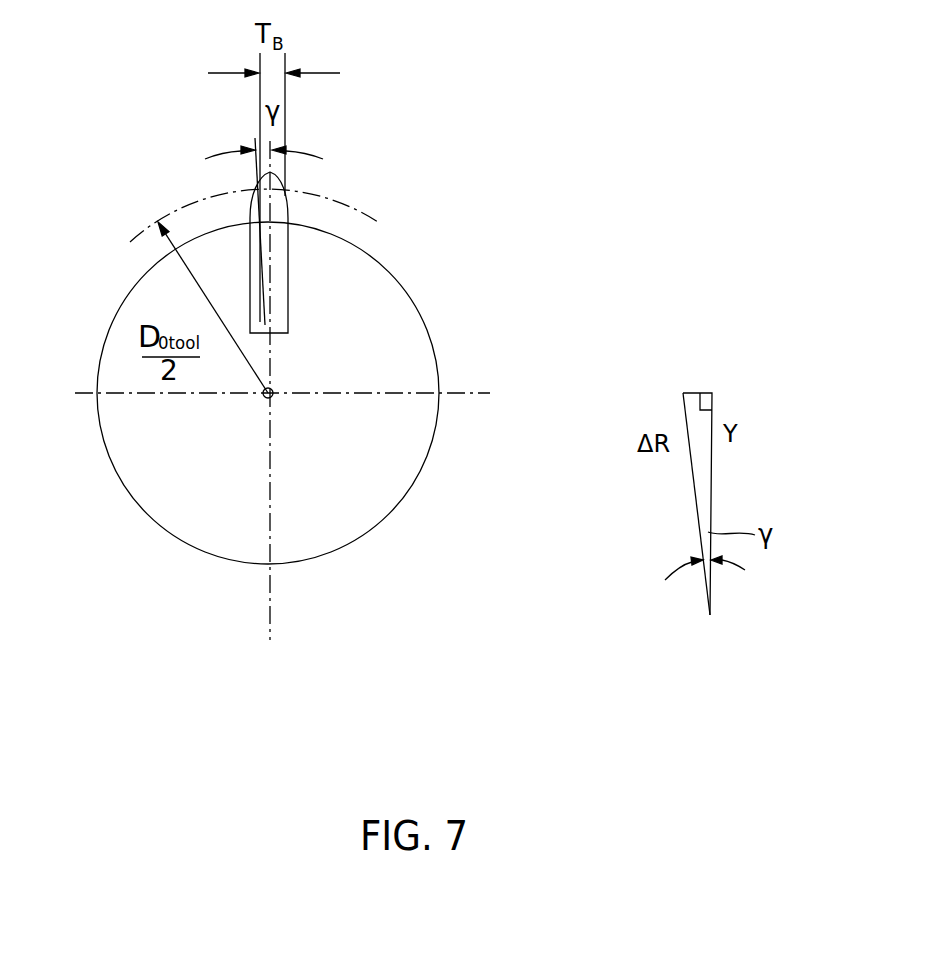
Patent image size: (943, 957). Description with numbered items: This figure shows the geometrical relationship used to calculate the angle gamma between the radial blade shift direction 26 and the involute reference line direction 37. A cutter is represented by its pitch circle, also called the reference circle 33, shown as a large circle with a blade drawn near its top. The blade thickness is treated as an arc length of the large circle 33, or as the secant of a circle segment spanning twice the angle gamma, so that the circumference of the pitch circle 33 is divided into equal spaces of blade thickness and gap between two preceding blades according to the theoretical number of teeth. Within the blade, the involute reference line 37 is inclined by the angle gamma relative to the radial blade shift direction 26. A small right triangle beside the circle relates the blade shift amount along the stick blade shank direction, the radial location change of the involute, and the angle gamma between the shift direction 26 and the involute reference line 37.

The cutter pitch circle 33 is at (318, 195).
The involute reference line 37 is at (262, 258).
The blade shift direction 26 is at (270, 285).